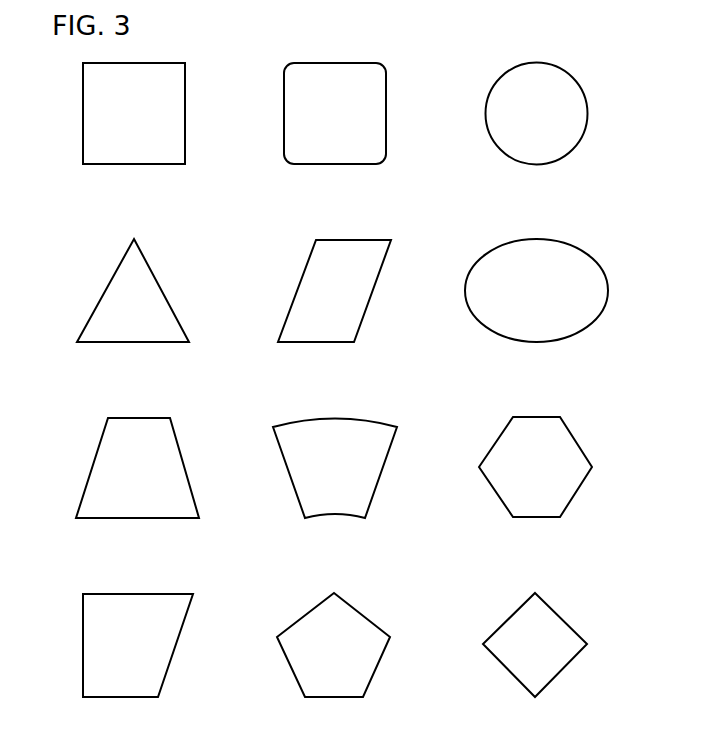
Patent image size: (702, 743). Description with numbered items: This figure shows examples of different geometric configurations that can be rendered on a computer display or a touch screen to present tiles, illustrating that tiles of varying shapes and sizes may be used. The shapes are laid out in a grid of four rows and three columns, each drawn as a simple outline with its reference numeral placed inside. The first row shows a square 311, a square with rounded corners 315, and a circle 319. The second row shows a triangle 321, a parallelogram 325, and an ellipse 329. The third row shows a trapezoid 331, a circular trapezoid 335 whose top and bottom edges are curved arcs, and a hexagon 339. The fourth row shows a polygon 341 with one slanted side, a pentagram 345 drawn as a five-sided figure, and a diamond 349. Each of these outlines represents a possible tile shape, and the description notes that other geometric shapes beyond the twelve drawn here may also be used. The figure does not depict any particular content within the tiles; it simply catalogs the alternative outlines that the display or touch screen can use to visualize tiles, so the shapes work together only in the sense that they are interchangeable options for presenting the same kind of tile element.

The square 311 is at (134, 113).
The square with rounded corners 315 is at (335, 113).
The circle 319 is at (537, 114).
The triangle 321 is at (133, 290).
The parallelogram 325 is at (334, 291).
The ellipse 329 is at (536, 290).
The trapezoid 331 is at (137, 468).
The circular trapezoid 335 is at (335, 469).
The hexagon 339 is at (535, 467).
The polygon 341 is at (138, 645).
The pentagram 345 is at (333, 645).
The diamond 349 is at (535, 645).